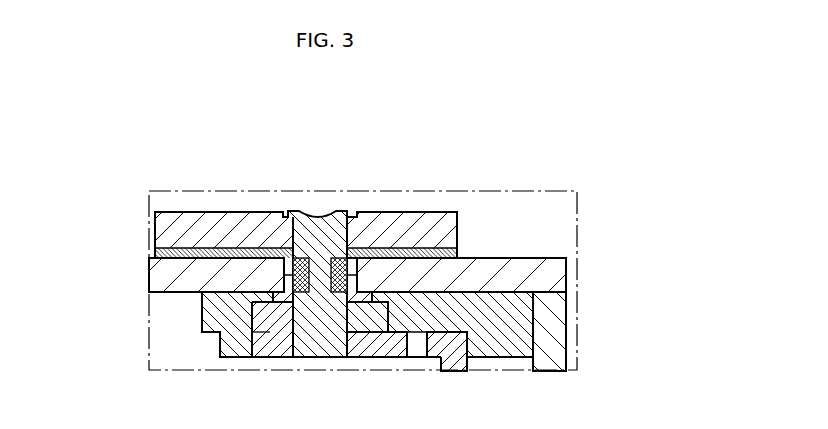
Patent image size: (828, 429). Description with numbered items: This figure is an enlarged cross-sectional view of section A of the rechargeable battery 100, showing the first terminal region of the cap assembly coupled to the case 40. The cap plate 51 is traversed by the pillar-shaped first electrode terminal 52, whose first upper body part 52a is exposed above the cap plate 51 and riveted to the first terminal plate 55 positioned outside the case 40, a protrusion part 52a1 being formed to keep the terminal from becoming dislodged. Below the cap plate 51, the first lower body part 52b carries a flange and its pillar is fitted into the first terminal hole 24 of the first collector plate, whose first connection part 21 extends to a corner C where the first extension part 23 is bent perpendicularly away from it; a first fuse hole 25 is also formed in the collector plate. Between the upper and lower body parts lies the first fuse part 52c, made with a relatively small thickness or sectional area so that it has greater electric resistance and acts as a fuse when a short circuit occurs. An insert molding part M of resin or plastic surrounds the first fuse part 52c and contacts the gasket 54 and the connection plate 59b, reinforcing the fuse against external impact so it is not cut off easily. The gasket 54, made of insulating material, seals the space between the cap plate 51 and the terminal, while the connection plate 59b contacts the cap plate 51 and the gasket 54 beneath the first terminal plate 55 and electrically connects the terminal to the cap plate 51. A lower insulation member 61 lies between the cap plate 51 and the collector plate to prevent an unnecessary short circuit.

The rechargeable battery 100 is at (102, 125).
The section A is at (577, 230).
The first terminal plate 55 is at (197, 217).
The gasket 54 is at (395, 248).
The connection plate 59b is at (463, 254).
The cap plate 51 is at (155, 274).
The first electrode terminal 52 is at (310, 232).
The first upper body part 52a is at (318, 248).
The protrusion part 52a1 is at (348, 211).
The first lower body part 52b is at (263, 301).
The first fuse part 52c is at (388, 136).
The insert molding part M is at (305, 284).
The first terminal hole 24 is at (290, 343).
The lower insulation member 61 is at (525, 314).
The case 40 is at (560, 332).
The first connection part 21 is at (382, 350).
The first fuse hole 25 is at (418, 350).
The first extension part 23 is at (451, 363).
The corner C is at (483, 328).